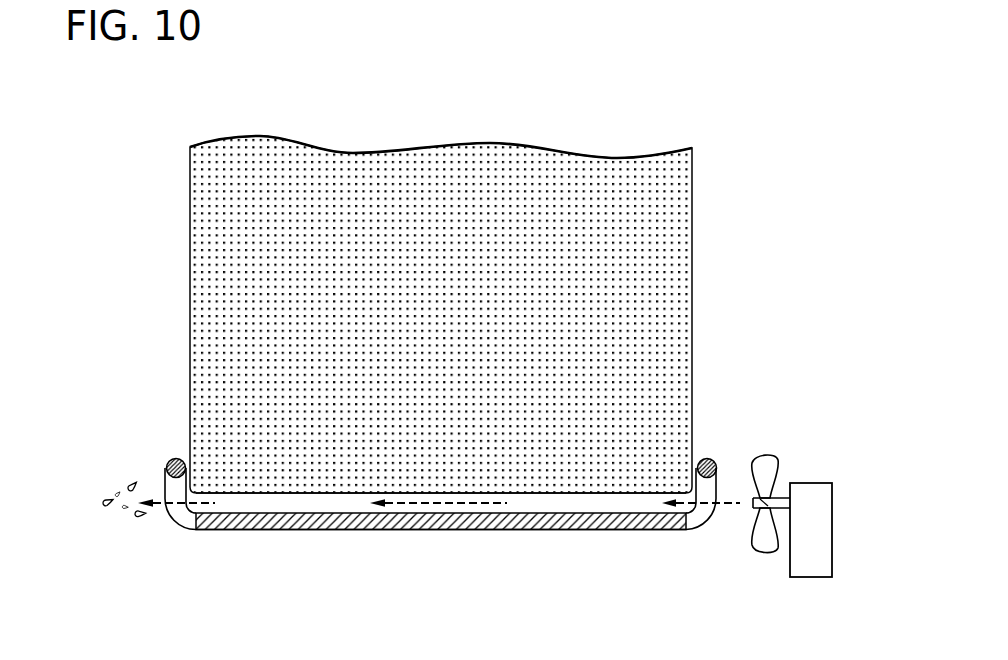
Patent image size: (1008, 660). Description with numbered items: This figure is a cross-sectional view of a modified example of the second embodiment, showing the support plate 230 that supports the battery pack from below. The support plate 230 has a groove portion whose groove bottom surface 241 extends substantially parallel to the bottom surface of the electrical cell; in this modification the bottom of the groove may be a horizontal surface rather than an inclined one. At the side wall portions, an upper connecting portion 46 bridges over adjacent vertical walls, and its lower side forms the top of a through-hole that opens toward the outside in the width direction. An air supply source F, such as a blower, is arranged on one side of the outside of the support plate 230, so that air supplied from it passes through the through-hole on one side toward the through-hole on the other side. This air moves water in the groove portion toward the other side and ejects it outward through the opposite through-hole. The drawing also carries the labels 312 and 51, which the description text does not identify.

The absorbent body / web 312 is at (672, 235).
The sheet 51 is at (287, 493).
The support plate 230 is at (362, 530).
The groove bottom surface 241 is at (548, 506).
The upper connecting portion 46 is at (170, 460).
The air supply source F is at (812, 483).